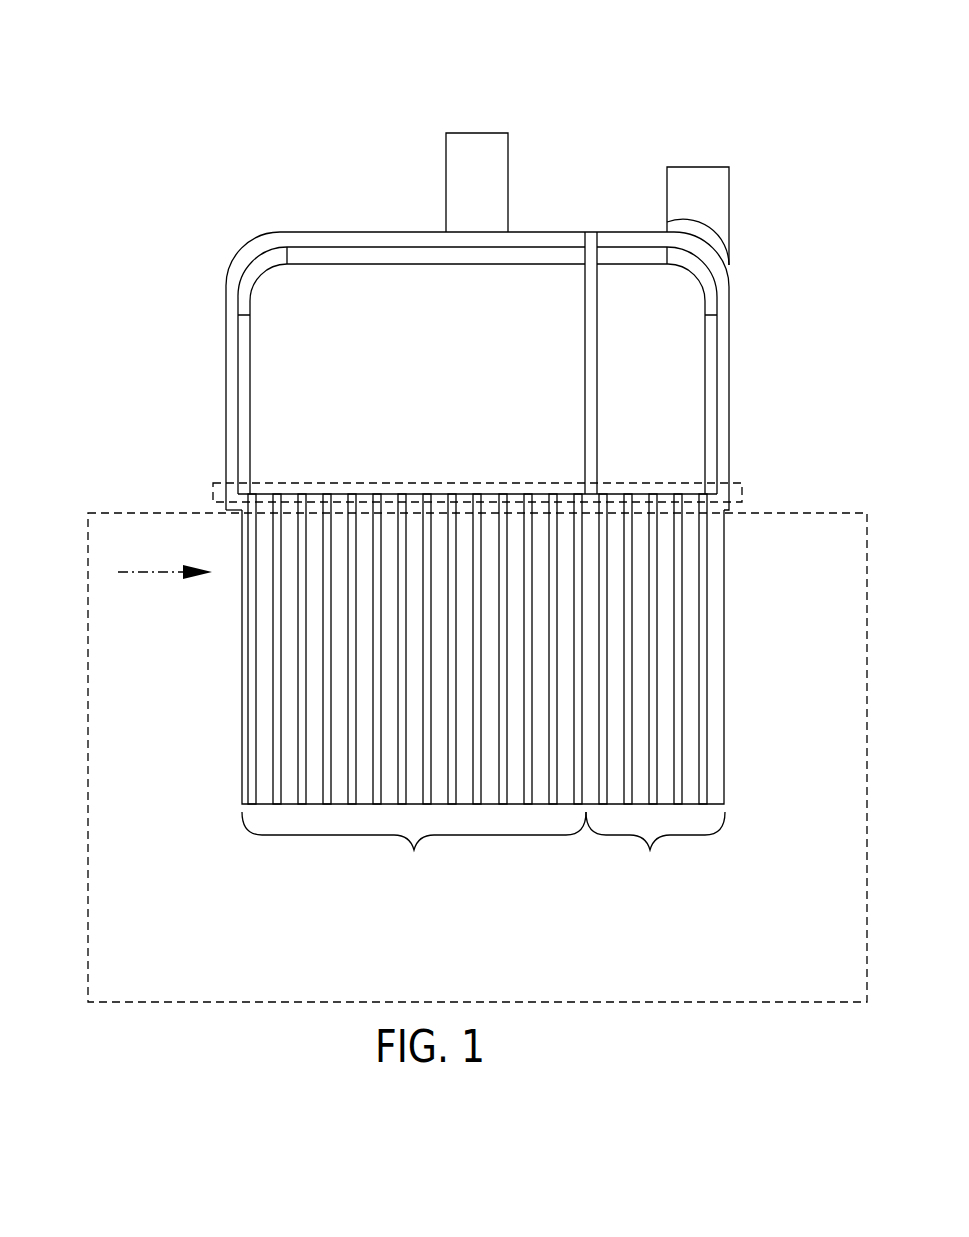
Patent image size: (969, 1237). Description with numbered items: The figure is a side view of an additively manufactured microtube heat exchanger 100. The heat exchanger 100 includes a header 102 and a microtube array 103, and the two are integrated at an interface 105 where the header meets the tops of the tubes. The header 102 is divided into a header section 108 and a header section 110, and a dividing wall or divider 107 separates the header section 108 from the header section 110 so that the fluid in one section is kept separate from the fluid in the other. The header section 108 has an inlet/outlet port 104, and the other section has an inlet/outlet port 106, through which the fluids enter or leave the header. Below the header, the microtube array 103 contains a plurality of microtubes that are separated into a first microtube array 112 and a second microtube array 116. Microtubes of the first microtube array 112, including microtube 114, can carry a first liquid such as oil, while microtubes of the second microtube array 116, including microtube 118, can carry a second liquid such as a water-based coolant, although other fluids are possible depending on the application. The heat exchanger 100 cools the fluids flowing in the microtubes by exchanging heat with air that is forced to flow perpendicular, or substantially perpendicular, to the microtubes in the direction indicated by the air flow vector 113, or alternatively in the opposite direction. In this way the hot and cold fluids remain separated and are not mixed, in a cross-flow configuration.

The additively manufactured microtube heat exchanger 100 is at (158, 50).
The header 102 is at (258, 242).
The microtube array 103 is at (810, 513).
The inlet/outlet port 104 is at (470, 133).
The interface 105 is at (742, 490).
The inlet/outlet port 106 is at (692, 172).
The divider 107 is at (591, 253).
The header section 108 is at (308, 348).
The header section 110 is at (658, 348).
The first microtube array 112 is at (414, 850).
The air flow vector 113 is at (152, 574).
The microtube 114 is at (278, 698).
The second microtube array 116 is at (650, 850).
The microtube 118 is at (683, 723).